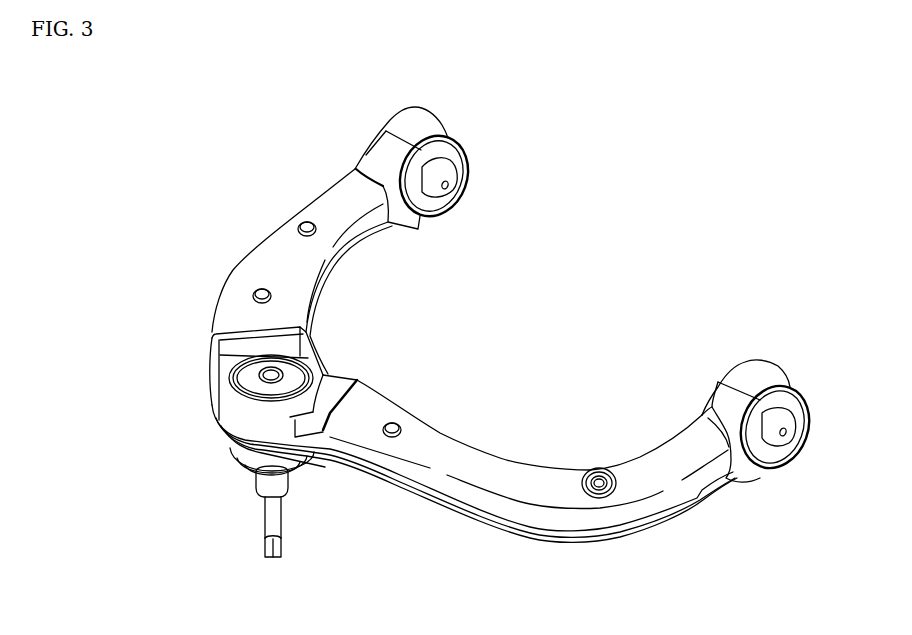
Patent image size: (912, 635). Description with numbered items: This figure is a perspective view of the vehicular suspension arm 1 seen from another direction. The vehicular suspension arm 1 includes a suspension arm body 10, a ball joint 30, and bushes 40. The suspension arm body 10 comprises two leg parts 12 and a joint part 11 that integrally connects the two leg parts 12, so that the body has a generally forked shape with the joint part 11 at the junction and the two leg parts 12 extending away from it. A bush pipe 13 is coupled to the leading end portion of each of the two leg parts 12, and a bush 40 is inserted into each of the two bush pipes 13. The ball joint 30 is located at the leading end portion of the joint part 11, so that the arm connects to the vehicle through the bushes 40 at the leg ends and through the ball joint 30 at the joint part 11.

The vehicular suspension arm 1 is at (597, 627).
The suspension arm body 10 is at (428, 498).
The joint part 11 is at (338, 382).
The leg parts 12 is at (343, 258).
The bush pipe 13 is at (427, 130).
The ball joint 30 is at (209, 407).
The bushes 40 is at (462, 173).